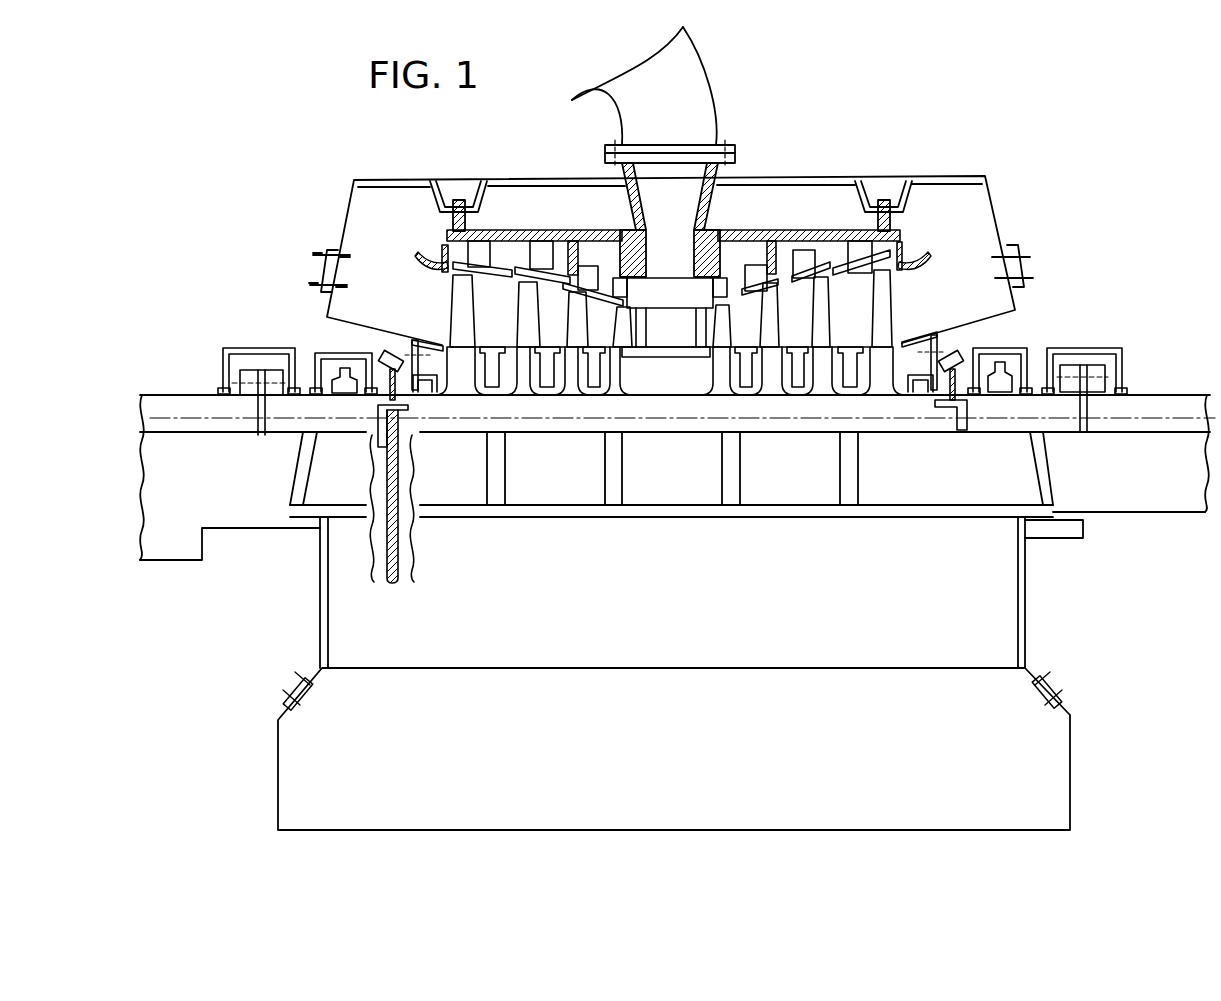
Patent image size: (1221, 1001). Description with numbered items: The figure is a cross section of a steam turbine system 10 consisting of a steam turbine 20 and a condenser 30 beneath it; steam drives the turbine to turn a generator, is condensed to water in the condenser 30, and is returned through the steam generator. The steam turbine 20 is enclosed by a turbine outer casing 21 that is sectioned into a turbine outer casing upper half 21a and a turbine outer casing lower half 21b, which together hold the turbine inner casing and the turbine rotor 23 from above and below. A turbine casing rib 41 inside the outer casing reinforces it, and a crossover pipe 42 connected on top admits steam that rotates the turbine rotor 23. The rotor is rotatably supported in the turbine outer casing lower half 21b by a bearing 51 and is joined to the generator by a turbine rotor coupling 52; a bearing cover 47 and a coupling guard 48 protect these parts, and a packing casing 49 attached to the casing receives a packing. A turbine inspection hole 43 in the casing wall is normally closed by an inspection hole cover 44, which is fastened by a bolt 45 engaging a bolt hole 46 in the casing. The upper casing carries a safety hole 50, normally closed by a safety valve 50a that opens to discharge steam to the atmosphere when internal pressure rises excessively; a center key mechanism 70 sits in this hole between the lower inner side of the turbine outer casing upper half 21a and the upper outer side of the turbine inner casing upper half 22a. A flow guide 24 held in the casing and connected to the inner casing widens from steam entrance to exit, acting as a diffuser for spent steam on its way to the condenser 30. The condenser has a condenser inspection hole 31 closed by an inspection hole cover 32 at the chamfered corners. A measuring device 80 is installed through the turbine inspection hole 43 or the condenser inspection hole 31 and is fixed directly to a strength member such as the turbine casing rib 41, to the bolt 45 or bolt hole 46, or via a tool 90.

The steam turbine system 10 is at (197, 141).
The steam turbine 20 is at (1047, 160).
The turbine outer casing 21 is at (1153, 157).
The turbine outer casing upper half 21a is at (1000, 212).
The turbine outer casing lower half 21b is at (1027, 593).
The turbine inner casing upper half 22a is at (780, 228).
The turbine rotor 23 is at (1036, 345).
The flow guide 24 is at (425, 256).
The condenser 30 is at (1076, 777).
The condenser inspection hole 31 is at (302, 700).
The inspection hole cover 32 is at (293, 688).
The turbine casing rib 41 is at (387, 560).
The crossover pipe 42 is at (712, 88).
The turbine inspection hole 43 is at (344, 270).
The inspection hole cover 44 is at (327, 268).
The bolt 45 is at (325, 251).
The bolt hole 46 is at (343, 272).
The bearing cover 47 is at (305, 352).
The coupling guard 48 is at (237, 349).
The packing casing 49 is at (422, 316).
The safety hole 50 is at (442, 182).
The safety valve 50a is at (467, 181).
The bearing 51 is at (332, 368).
The turbine rotor coupling 52 is at (270, 368).
The center key mechanism 70 is at (458, 192).
The measuring device 80 is at (396, 358).
The tool 90 is at (410, 410).